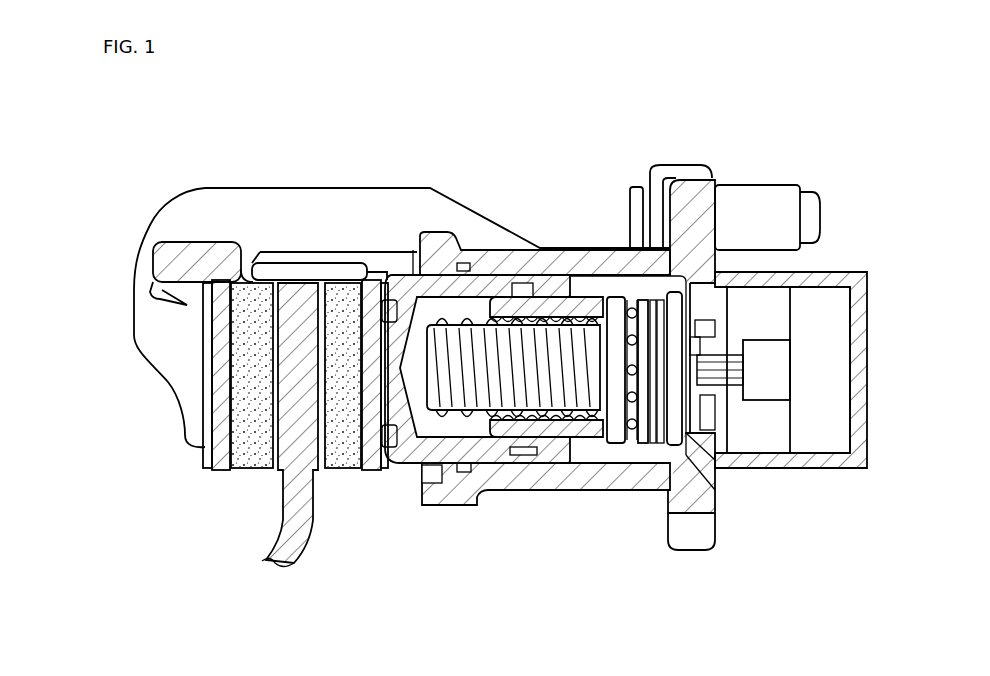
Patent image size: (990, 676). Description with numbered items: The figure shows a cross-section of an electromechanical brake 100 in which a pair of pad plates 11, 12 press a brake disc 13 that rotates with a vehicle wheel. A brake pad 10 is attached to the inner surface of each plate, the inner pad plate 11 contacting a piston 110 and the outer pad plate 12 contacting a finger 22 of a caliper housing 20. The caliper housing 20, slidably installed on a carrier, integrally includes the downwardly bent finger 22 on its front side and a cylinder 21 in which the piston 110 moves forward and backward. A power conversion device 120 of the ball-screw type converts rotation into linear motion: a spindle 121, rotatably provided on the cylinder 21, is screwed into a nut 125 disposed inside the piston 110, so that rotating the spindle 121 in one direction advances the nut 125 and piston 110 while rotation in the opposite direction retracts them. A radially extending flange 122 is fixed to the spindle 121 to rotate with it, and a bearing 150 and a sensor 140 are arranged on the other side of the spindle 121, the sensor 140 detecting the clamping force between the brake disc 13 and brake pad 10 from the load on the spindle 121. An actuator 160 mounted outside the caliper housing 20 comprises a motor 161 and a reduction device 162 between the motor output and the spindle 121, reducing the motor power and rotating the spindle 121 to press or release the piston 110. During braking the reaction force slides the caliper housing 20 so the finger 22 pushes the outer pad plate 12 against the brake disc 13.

The electromechanical brake 100 is at (621, 107).
The caliper housing 20 is at (418, 184).
The cylinder 21 is at (610, 267).
The finger 22 is at (174, 388).
The brake pad 10 is at (261, 467).
The inner pad plate 11 is at (377, 467).
The outer pad plate 12 is at (218, 468).
The brake disc 13 is at (298, 562).
The piston 110 is at (484, 292).
The power conversion device 120 is at (572, 538).
The spindle 121 is at (515, 438).
The nut 125 is at (553, 430).
The flange 122 is at (613, 437).
The bearing 150 is at (646, 437).
The sensor 140 is at (716, 462).
The actuator 160 is at (928, 342).
The motor 161 is at (848, 345).
The reduction device 162 is at (775, 385).